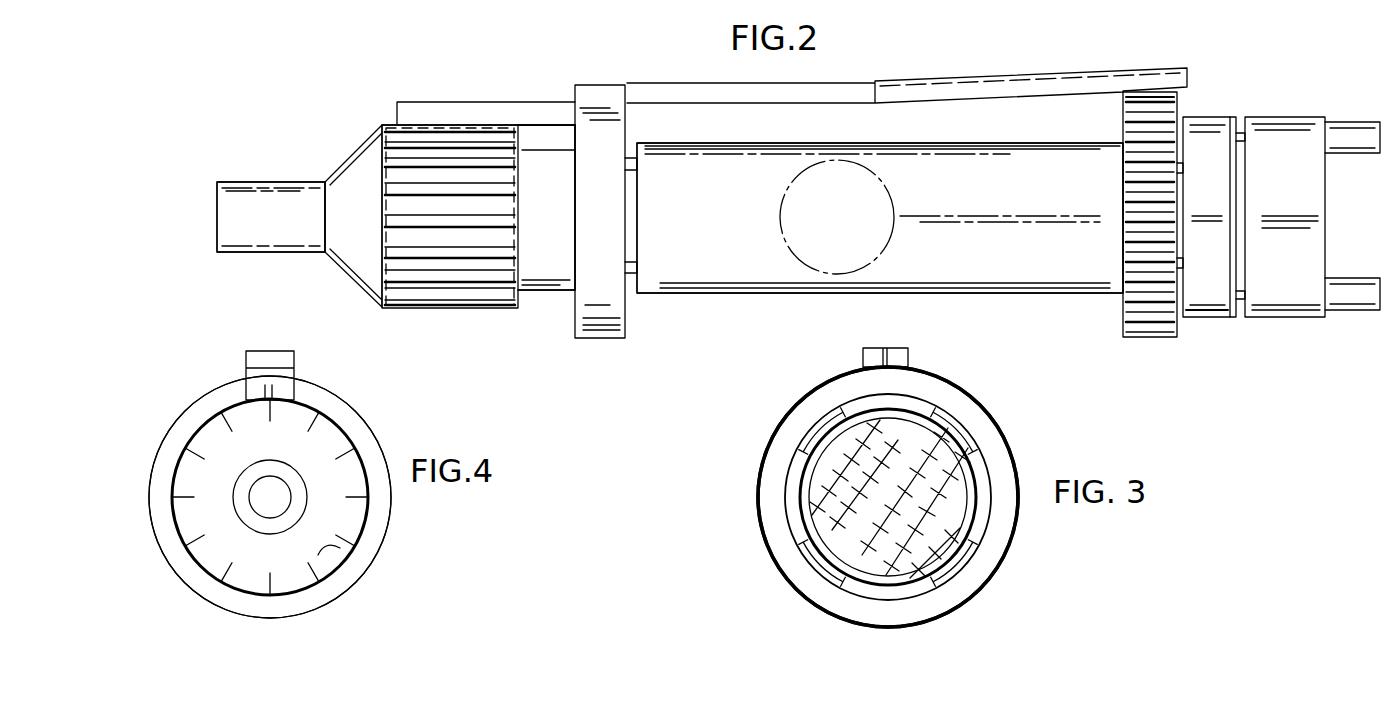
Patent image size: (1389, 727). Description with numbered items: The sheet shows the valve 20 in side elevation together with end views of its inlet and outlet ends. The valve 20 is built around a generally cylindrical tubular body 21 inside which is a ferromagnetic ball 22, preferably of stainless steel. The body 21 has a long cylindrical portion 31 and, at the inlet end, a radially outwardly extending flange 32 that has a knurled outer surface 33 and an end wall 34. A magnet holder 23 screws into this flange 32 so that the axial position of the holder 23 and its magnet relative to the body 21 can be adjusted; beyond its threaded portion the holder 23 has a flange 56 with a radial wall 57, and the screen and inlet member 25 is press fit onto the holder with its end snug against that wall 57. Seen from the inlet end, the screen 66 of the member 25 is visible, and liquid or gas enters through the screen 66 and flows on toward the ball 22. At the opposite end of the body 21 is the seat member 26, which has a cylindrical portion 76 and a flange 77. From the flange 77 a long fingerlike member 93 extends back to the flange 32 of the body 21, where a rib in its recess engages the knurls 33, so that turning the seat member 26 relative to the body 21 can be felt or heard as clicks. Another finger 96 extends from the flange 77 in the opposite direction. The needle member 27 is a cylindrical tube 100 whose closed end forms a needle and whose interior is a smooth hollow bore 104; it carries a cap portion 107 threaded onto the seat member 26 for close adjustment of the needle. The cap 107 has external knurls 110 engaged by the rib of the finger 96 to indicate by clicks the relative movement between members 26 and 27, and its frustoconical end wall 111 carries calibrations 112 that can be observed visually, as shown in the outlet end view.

In FIG. 2, the valve 20 is at (312, 74).
In FIG. 4, the valve 20 is at (343, 382).
In FIG. 3, the valve 20 is at (1030, 426).
In FIG. 2, the body 21 is at (1040, 129).
In FIG. 2, the ferromagnetic ball 22 is at (788, 243).
In FIG. 2, the magnet holder 23 is at (1238, 97).
In FIG. 2, the screen and inlet member 25 is at (1302, 94).
In FIG. 3, the screen and inlet member 25 is at (768, 467).
In FIG. 2, the seat member 26 is at (557, 312).
In FIG. 4, the seat member 26 is at (184, 389).
In FIG. 2, the needle member 27 is at (368, 307).
In FIG. 4, the needle member 27 is at (358, 418).
In FIG. 2, the cylindrical portion 31 is at (1010, 192).
In FIG. 2, the flange 32 is at (1123, 318).
In FIG. 3, the flange 32 is at (958, 409).
In FIG. 2, the knurled outer surface 33 is at (1138, 338).
In FIG. 3, the knurled outer surface 33 is at (795, 402).
In FIG. 2, the end wall 34 is at (1177, 110).
In FIG. 3, the end wall 34 is at (795, 428).
In FIG. 2, the flange 56 is at (1208, 315).
In FIG. 2, the radial wall 57 is at (1237, 312).
In FIG. 3, the screen 66 is at (854, 544).
In FIG. 2, the cylindrical portion 76 is at (537, 145).
In FIG. 2, the flange 77 is at (600, 120).
In FIG. 2, the fingerlike member 93 is at (832, 83).
In FIG. 4, the fingerlike member 93 is at (282, 352).
In FIG. 3, the fingerlike member 93 is at (908, 351).
In FIG. 2, the finger 96 is at (465, 112).
In FIG. 2, the cylindrical tube 100 is at (286, 190).
In FIG. 4, the hollow cylindrical bore 104 is at (278, 490).
In FIG. 2, the cap portion 107 is at (425, 300).
In FIG. 2, the external knurls 110 is at (478, 294).
In FIG. 2, the frustoconical end wall 111 is at (346, 251).
In FIG. 4, the frustoconical end wall 111 is at (350, 500).
In FIG. 2, the calibrations 112 is at (382, 272).
In FIG. 4, the calibrations 112 is at (355, 545).